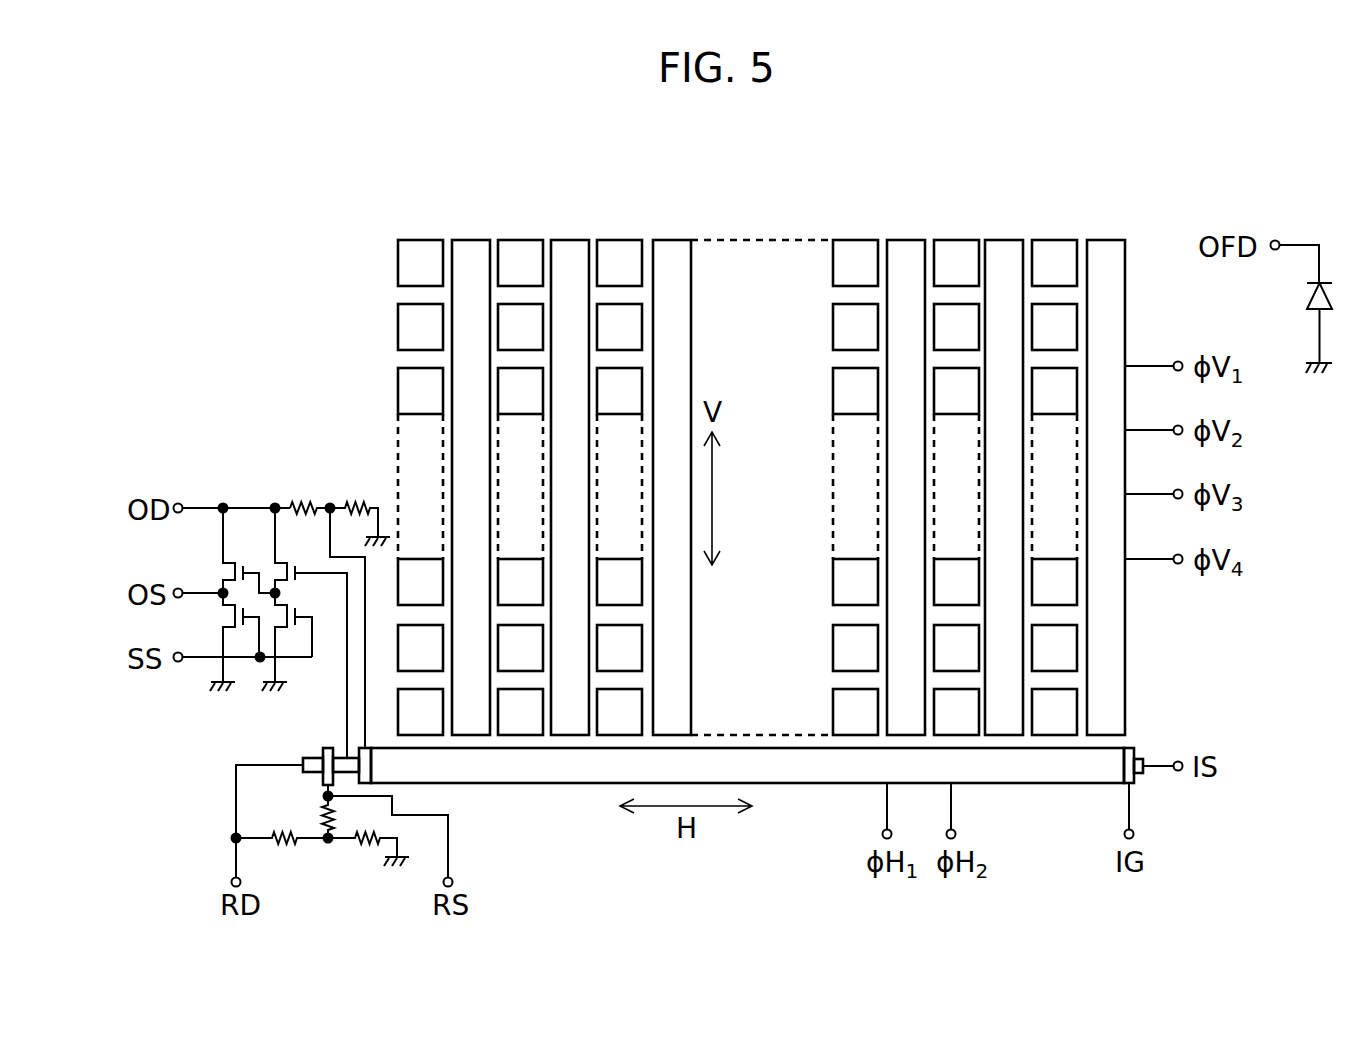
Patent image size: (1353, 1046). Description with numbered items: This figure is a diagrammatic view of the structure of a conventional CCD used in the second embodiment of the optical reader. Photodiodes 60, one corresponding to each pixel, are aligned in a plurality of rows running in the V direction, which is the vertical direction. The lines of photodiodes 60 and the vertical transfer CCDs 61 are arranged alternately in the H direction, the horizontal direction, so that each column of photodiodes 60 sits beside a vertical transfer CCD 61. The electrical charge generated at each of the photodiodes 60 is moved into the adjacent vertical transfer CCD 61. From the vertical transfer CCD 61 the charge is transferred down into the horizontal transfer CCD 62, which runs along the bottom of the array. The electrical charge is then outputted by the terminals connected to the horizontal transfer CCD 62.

The photodiodes 60 is at (818, 250).
The vertical transfer CCD 61 is at (471, 246).
The horizontal transfer CCD 62 is at (817, 773).